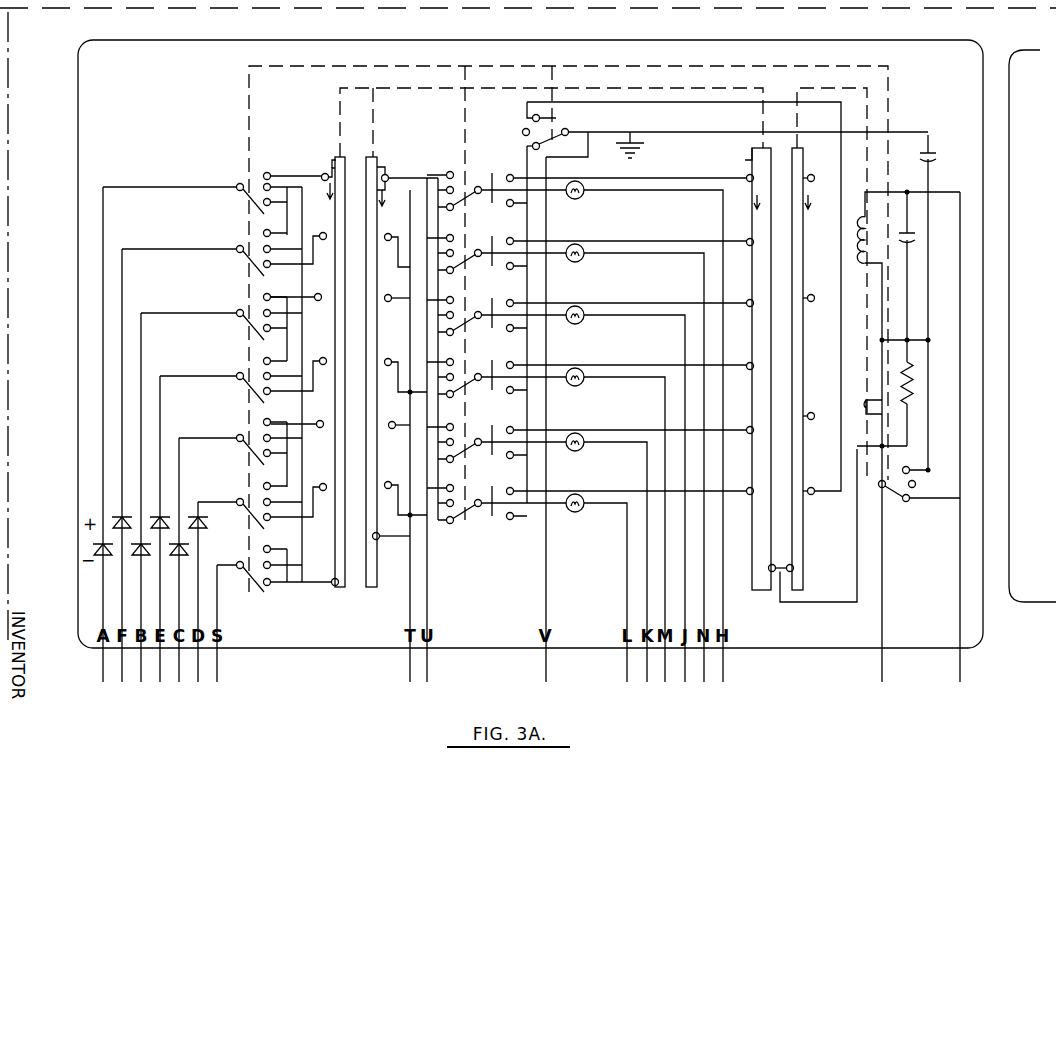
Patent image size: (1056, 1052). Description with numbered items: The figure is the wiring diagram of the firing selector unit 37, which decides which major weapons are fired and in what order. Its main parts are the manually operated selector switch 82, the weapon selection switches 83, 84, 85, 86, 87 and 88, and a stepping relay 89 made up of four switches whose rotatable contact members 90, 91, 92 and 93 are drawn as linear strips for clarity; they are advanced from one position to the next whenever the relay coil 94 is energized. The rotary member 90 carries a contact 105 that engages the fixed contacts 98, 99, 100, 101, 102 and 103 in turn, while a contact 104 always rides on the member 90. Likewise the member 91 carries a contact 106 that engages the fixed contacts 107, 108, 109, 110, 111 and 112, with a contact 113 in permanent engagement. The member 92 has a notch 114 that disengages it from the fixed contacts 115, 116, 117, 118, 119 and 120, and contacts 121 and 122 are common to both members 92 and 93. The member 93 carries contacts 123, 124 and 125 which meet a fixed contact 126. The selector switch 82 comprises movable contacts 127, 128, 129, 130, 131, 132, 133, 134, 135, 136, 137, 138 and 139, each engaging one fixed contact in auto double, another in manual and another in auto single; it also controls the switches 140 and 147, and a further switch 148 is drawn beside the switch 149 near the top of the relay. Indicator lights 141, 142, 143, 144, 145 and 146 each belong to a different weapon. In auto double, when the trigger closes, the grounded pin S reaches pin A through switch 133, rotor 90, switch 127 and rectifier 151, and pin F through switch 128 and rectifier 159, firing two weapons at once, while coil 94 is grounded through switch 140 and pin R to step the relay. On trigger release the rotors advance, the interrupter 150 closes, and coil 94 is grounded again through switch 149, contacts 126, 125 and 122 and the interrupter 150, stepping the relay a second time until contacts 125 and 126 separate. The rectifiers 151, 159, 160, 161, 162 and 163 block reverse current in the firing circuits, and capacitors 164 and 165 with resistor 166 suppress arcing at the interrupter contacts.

The selector unit 37 is at (836, 40).
The manually operated selector switch 82 is at (255, 66).
The switch 83 is at (491, 181).
The switch 84 is at (490, 243).
The switch 85 is at (490, 308).
The switch 86 is at (490, 371).
The switch 87 is at (490, 434).
The switch 88 is at (490, 492).
The stepping relay 89 is at (350, 88).
The rotatable contact member 90 is at (340, 588).
The rotatable contact member 91 is at (371, 588).
The rotatable contact member 92 is at (762, 591).
The rotatable contact member 93 is at (800, 591).
The relay coil 94 is at (866, 263).
The fixed contact 98 is at (321, 175).
The fixed contact 99 is at (321, 232).
The fixed contact 100 is at (317, 293).
The fixed contact 101 is at (322, 357).
The fixed contact 102 is at (318, 420).
The fixed contact 103 is at (322, 483).
The contact 104 is at (333, 578).
The contact 105 is at (333, 160).
The contact 106 is at (388, 175).
The fixed contact 107 is at (393, 177).
The fixed contact 108 is at (386, 233).
The fixed contact 109 is at (386, 294).
The fixed contact 110 is at (386, 358).
The fixed contact 111 is at (391, 421).
The fixed contact 112 is at (386, 481).
The contact 113 is at (379, 540).
The notch 114 is at (745, 160).
The fixed contact 115 is at (746, 176).
The fixed contact 116 is at (747, 239).
The fixed contact 117 is at (747, 299).
The fixed contact 118 is at (747, 362).
The fixed contact 119 is at (747, 426).
The fixed contact 120 is at (747, 487).
The contact 121 is at (768, 568).
The contact 122 is at (794, 568).
The contact 123 is at (814, 174).
The contact 124 is at (814, 294).
The contact 125 is at (814, 412).
The fixed contact 126 is at (813, 495).
The movable contact 127 is at (256, 198).
The movable contact 128 is at (256, 260).
The movable contact 129 is at (256, 324).
The movable contact 130 is at (256, 387).
The movable contact 131 is at (256, 449).
The movable contact 132 is at (258, 516).
The movable contact 133 is at (256, 578).
The movable contact 134 is at (457, 206).
The movable contact 135 is at (457, 270).
The movable contact 136 is at (457, 332).
The movable contact 137 is at (457, 394).
The movable contact 138 is at (457, 458).
The movable contact 139 is at (460, 520).
The switch 140 is at (899, 502).
The indicator light 141 is at (583, 196).
The indicator light 142 is at (583, 259).
The indicator light 143 is at (583, 321).
The indicator light 144 is at (583, 383).
The indicator light 145 is at (583, 448).
The indicator light 146 is at (582, 509).
The switch 147 is at (546, 140).
The switch 148 is at (532, 144).
The switch 149 is at (556, 118).
The interrupter 150 is at (865, 414).
The rectifier 151 is at (92, 552).
The rectifier 159 is at (120, 516).
The rectifier 160 is at (139, 550).
The rectifier 161 is at (158, 516).
The rectifier 162 is at (177, 551).
The rectifier 163 is at (196, 516).
The capacitor 164 is at (916, 242).
The capacitor 165 is at (934, 155).
The resistor 166 is at (914, 384).